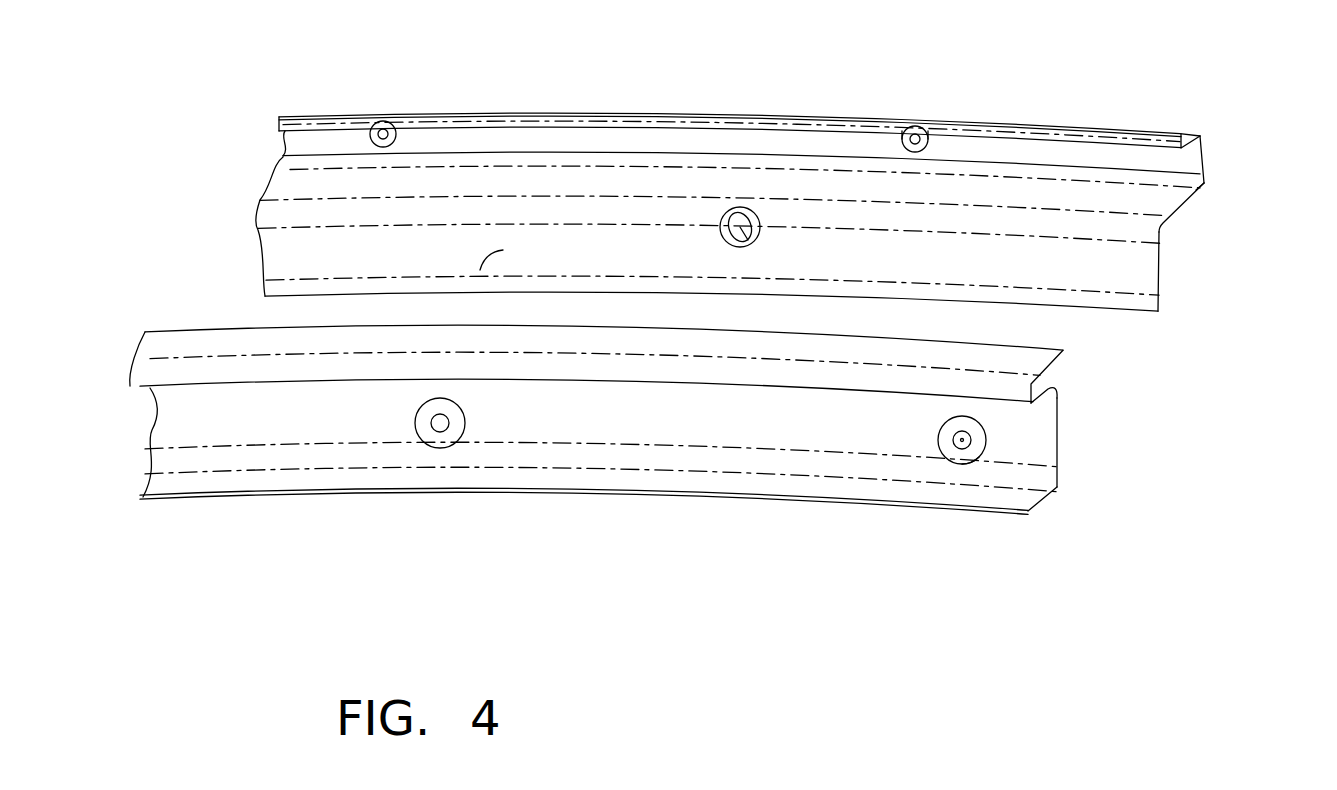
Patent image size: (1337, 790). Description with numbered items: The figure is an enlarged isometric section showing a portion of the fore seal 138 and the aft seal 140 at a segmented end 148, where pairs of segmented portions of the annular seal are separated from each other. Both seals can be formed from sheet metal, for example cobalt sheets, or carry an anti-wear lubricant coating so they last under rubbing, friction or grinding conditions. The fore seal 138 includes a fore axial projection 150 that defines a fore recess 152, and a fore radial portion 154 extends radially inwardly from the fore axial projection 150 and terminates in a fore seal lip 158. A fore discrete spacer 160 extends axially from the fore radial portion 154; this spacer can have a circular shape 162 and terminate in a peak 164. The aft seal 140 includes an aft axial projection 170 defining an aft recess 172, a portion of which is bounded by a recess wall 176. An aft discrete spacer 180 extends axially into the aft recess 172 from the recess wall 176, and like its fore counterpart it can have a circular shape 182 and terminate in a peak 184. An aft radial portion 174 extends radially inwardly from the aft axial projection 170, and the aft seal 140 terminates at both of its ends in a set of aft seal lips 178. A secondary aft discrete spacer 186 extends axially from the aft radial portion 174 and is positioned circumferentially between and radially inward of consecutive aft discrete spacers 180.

The fore seal 138 is at (473, 358).
The aft seal 140 is at (467, 177).
The segmented end 148 is at (1147, 232).
The fore axial projection 150 is at (1047, 397).
The fore recess 152 is at (1066, 374).
The fore radial portion 154 is at (1040, 430).
The fore seal lip 158 is at (1043, 502).
The fore discrete spacer 160 is at (450, 440).
The circular shape 162 is at (982, 458).
The peak 164 is at (960, 441).
The aft axial projection 170 is at (1182, 208).
The aft recess 172 is at (1207, 193).
The aft radial portion 174 is at (1160, 273).
The recess wall 176 is at (1205, 161).
The aft seal lips 178 is at (1162, 132).
The aft discrete spacer 180 is at (386, 130).
The circular shape 182 is at (932, 146).
The peak 184 is at (895, 133).
The secondary aft discrete spacer 186 is at (750, 240).